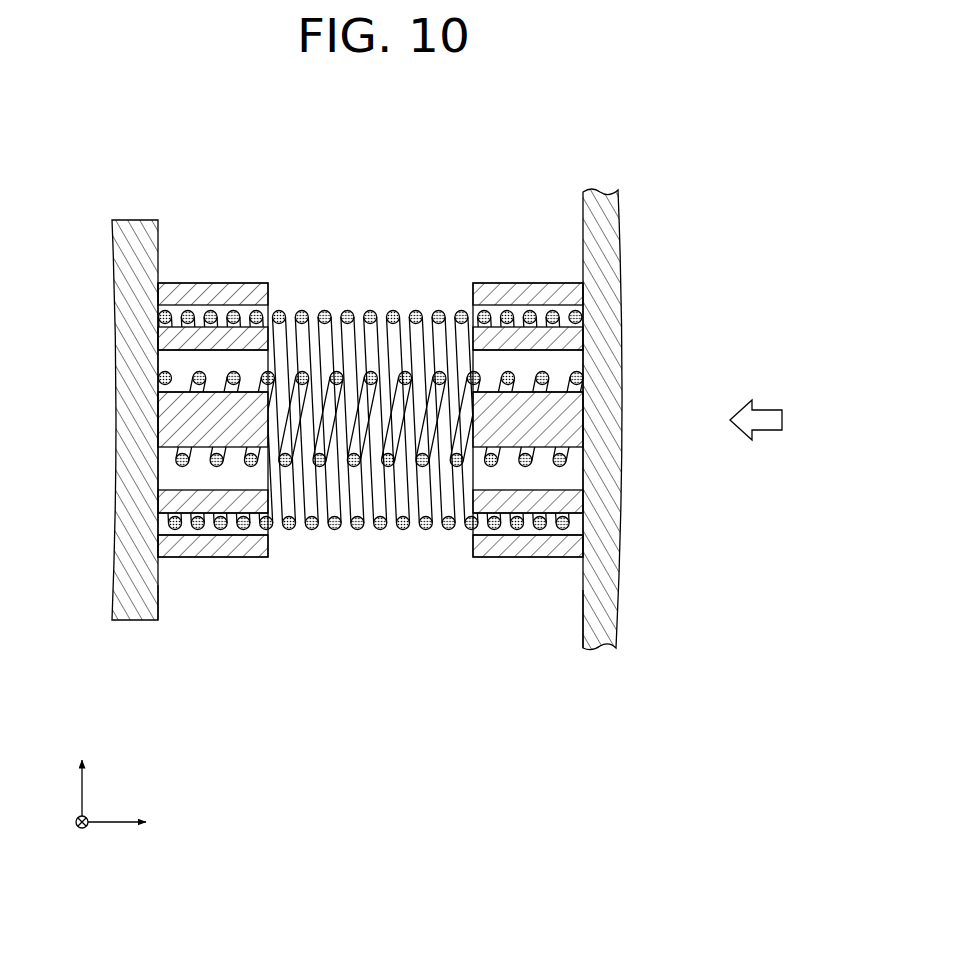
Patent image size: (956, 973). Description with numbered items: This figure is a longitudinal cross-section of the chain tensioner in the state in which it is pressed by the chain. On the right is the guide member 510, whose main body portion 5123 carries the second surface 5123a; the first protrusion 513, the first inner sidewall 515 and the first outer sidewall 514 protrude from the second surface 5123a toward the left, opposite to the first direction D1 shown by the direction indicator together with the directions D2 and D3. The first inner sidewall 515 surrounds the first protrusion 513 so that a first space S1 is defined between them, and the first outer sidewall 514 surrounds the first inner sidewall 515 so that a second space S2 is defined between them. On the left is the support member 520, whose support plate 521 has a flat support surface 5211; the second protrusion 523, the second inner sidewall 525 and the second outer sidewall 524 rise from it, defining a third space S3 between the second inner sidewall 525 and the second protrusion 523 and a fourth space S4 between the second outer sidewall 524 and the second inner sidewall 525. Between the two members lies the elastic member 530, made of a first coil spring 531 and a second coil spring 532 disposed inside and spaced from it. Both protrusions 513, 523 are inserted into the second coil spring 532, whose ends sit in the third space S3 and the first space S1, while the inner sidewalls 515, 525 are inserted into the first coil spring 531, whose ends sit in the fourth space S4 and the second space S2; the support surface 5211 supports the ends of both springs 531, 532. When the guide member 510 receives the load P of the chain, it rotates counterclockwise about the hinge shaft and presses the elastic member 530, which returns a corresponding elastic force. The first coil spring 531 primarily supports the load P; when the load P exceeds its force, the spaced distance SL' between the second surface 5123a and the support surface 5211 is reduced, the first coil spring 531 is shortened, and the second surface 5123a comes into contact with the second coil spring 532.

The guide member 510 is at (631, 409).
The side wall of housing 5123 is at (600, 250).
The second surface 5123a is at (583, 590).
The support plate 521 is at (120, 251).
The support surface 5211 is at (160, 590).
The support member 520 is at (154, 463).
The second outer sidewall 524 is at (205, 293).
The second inner sidewall 525 is at (205, 337).
The second protrusion 523 is at (178, 422).
The first outer sidewall 514 is at (575, 293).
The first inner sidewall 515 is at (570, 337).
The first protrusion 513 is at (591, 420).
The elastic member 530 is at (371, 480).
The first coil spring 531 is at (313, 531).
The second coil spring 532 is at (292, 600).
The first space S1 is at (569, 363).
The second space S2 is at (575, 528).
The third space S3 is at (170, 363).
The fourth space S4 is at (160, 526).
The spaced distance SL' is at (370, 228).
The load of the chain P is at (767, 420).
The first direction D1 is at (135, 825).
The second direction D2 is at (84, 773).
The third direction D3 is at (84, 839).